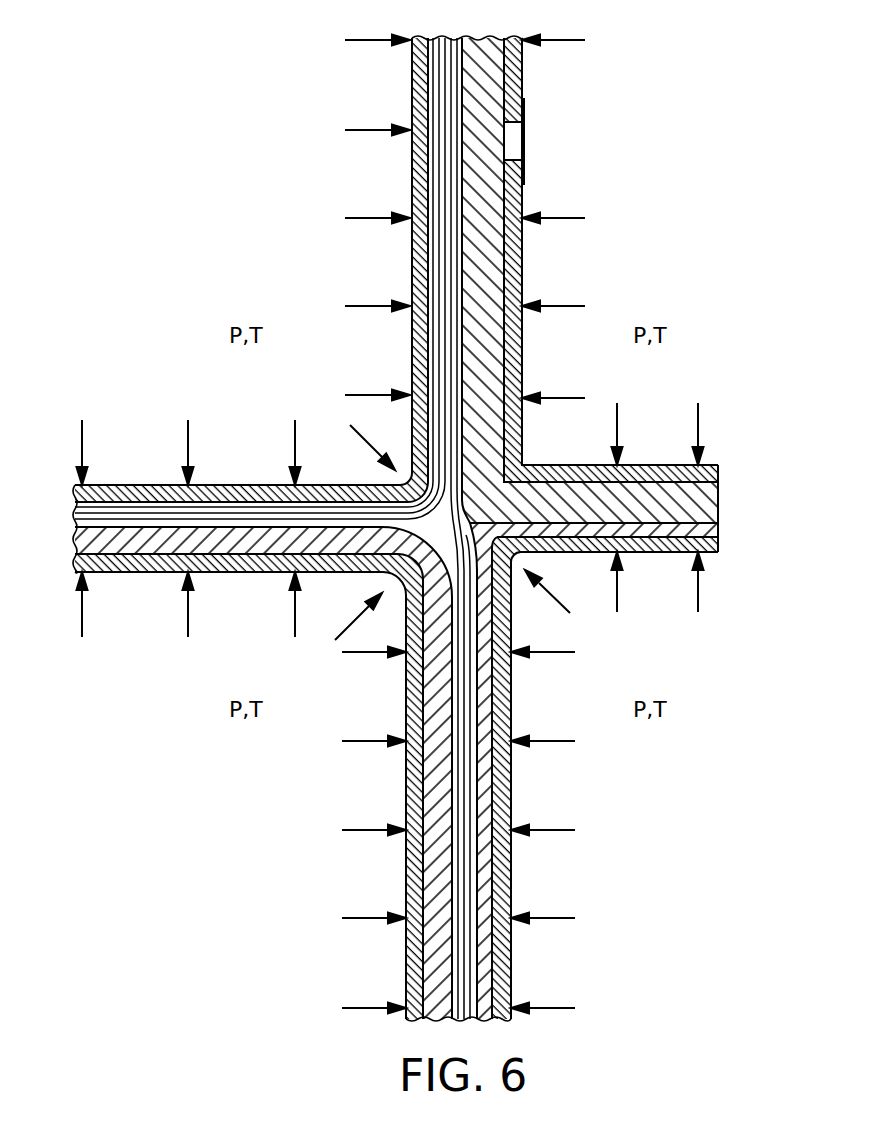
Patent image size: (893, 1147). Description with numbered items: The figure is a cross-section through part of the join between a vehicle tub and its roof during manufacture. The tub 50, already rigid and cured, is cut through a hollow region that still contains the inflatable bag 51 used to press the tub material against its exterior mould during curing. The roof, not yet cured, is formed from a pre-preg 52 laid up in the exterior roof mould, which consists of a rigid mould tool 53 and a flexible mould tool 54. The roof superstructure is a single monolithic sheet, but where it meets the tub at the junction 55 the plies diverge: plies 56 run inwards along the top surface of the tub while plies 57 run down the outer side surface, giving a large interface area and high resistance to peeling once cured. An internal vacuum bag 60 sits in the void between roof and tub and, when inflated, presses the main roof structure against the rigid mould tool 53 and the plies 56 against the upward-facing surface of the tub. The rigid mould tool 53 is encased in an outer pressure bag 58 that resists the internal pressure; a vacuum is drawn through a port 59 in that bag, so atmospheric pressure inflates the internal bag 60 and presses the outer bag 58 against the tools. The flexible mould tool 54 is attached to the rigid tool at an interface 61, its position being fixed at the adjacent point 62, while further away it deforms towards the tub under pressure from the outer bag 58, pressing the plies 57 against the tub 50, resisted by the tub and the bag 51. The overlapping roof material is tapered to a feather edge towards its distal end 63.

The tub 50 is at (432, 700).
The inflatable bag 51 is at (412, 876).
The pre-preg 52 is at (434, 171).
The rigid mould tool 53 is at (490, 351).
The flexible mould tool 54 is at (487, 695).
The junction 55 is at (428, 527).
The plies 56 is at (243, 505).
The plies 57 is at (468, 783).
The outer pressure bag 58 is at (650, 553).
The port 59 is at (513, 138).
The internal vacuum bag 60 is at (413, 258).
The interface 61 is at (647, 472).
The point adjacent the rigid mould tool 62 is at (480, 588).
The distal end 63 is at (487, 982).